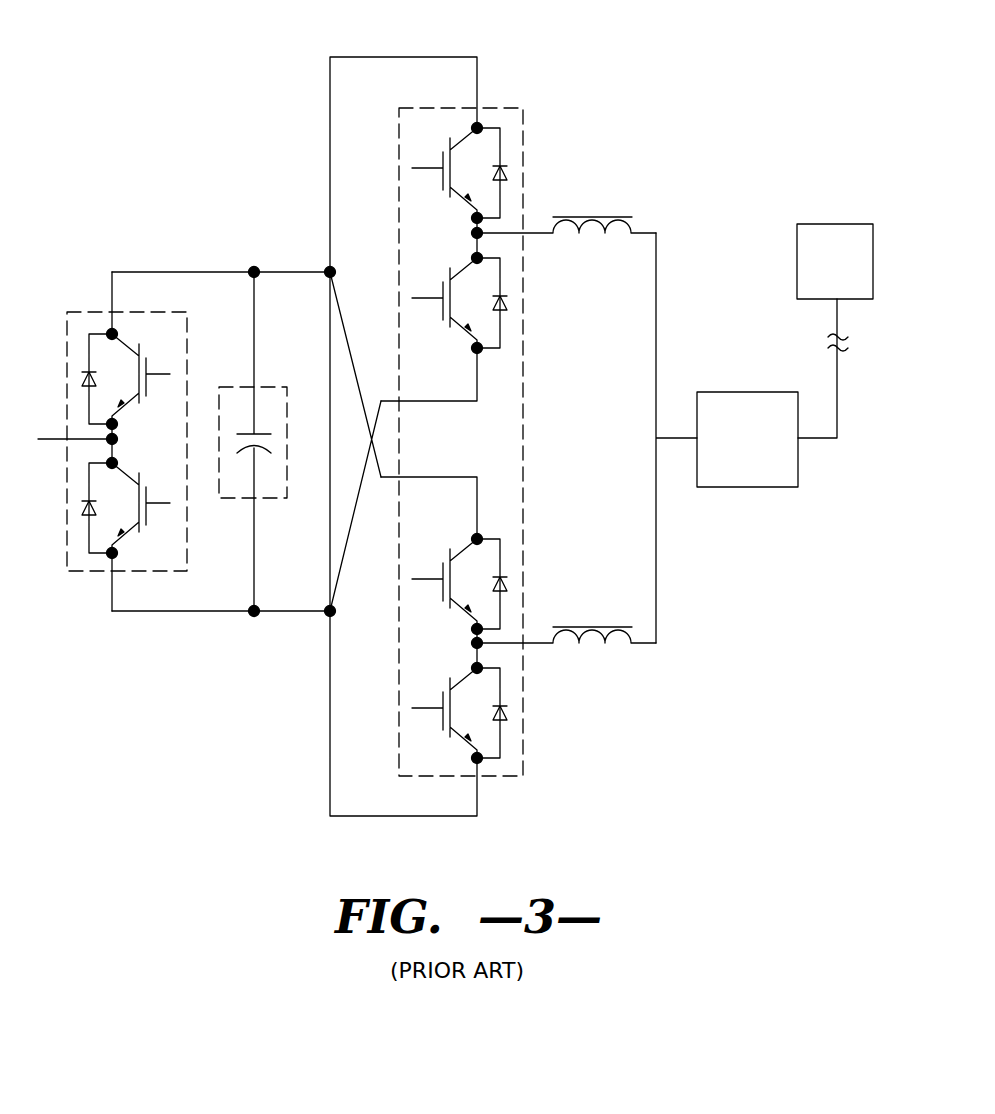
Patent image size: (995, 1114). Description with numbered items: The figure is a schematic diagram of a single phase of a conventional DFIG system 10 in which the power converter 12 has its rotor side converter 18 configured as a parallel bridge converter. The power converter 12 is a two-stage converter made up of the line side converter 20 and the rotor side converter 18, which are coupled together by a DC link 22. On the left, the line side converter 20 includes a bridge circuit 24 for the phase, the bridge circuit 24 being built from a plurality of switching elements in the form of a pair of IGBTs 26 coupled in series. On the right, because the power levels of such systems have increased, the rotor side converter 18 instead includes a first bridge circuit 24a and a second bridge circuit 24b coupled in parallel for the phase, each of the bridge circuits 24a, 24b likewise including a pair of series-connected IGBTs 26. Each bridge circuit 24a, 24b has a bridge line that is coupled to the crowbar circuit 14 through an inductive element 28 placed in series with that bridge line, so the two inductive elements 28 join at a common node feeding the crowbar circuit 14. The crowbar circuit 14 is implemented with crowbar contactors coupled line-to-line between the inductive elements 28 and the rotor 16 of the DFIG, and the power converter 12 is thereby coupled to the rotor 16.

The DFIG system 10 is at (629, 79).
The power converter 12 is at (256, 212).
The crowbar circuit 14 is at (727, 438).
The rotor 16 is at (835, 331).
The rotor side converter 18 is at (500, 108).
The line side converter 20 is at (88, 312).
The DC link 22 is at (250, 302).
The bridge circuit 24 is at (112, 558).
The first bridge circuit 24a is at (480, 384).
The second bridge circuit 24b is at (480, 490).
The IGBTs 26 is at (122, 403).
The inductive element 28 is at (585, 217).